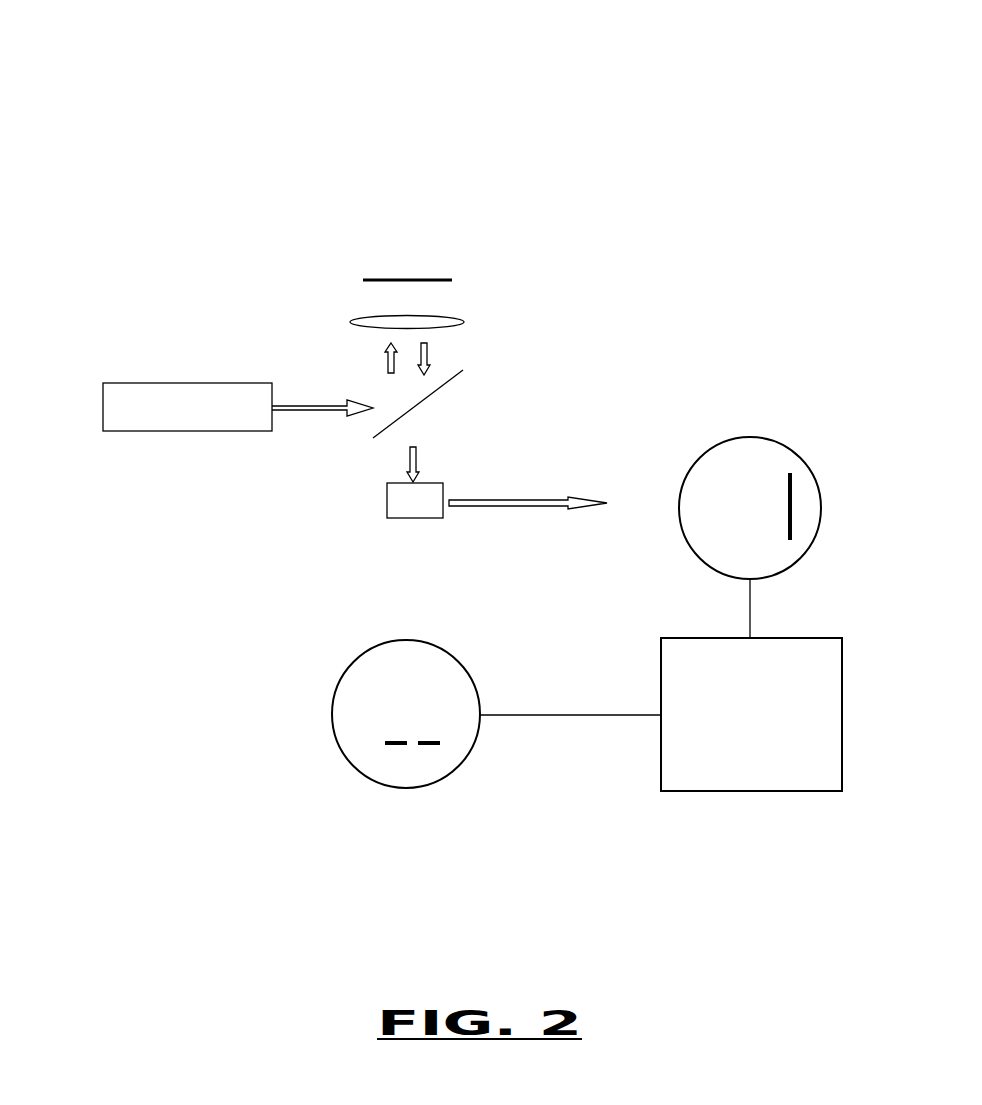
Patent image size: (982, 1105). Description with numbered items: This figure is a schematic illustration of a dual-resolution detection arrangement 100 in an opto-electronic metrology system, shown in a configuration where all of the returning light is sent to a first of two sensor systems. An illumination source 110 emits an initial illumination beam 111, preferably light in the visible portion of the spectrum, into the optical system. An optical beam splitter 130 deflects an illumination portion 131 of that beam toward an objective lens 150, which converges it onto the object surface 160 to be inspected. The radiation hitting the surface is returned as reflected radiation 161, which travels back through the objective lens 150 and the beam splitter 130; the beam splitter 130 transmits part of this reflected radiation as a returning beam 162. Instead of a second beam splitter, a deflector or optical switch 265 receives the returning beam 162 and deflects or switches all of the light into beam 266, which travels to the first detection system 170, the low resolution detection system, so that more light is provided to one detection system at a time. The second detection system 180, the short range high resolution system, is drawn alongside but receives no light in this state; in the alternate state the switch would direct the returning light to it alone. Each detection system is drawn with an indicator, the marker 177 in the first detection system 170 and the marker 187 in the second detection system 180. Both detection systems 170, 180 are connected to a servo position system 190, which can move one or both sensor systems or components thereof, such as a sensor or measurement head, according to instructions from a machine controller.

The opto-electronic metrology detection arrangement 100 is at (302, 87).
The illumination source 110 is at (148, 383).
The light beam 111 is at (307, 416).
The optical beam splitter 130 is at (442, 390).
The illumination portion 131 is at (385, 352).
The objective lens 150 is at (465, 317).
The object surface 160 is at (460, 275).
The reflected radiation 161 is at (435, 353).
The returning beam 162 is at (425, 465).
The deflector or optical switch 265 is at (362, 519).
The beam 266 is at (530, 495).
The first detection system 170 is at (772, 417).
The lens position marker 177 is at (802, 507).
The second detection system 180 is at (327, 771).
The surface position marker 187 is at (428, 753).
The servo position system 190 is at (751, 714).